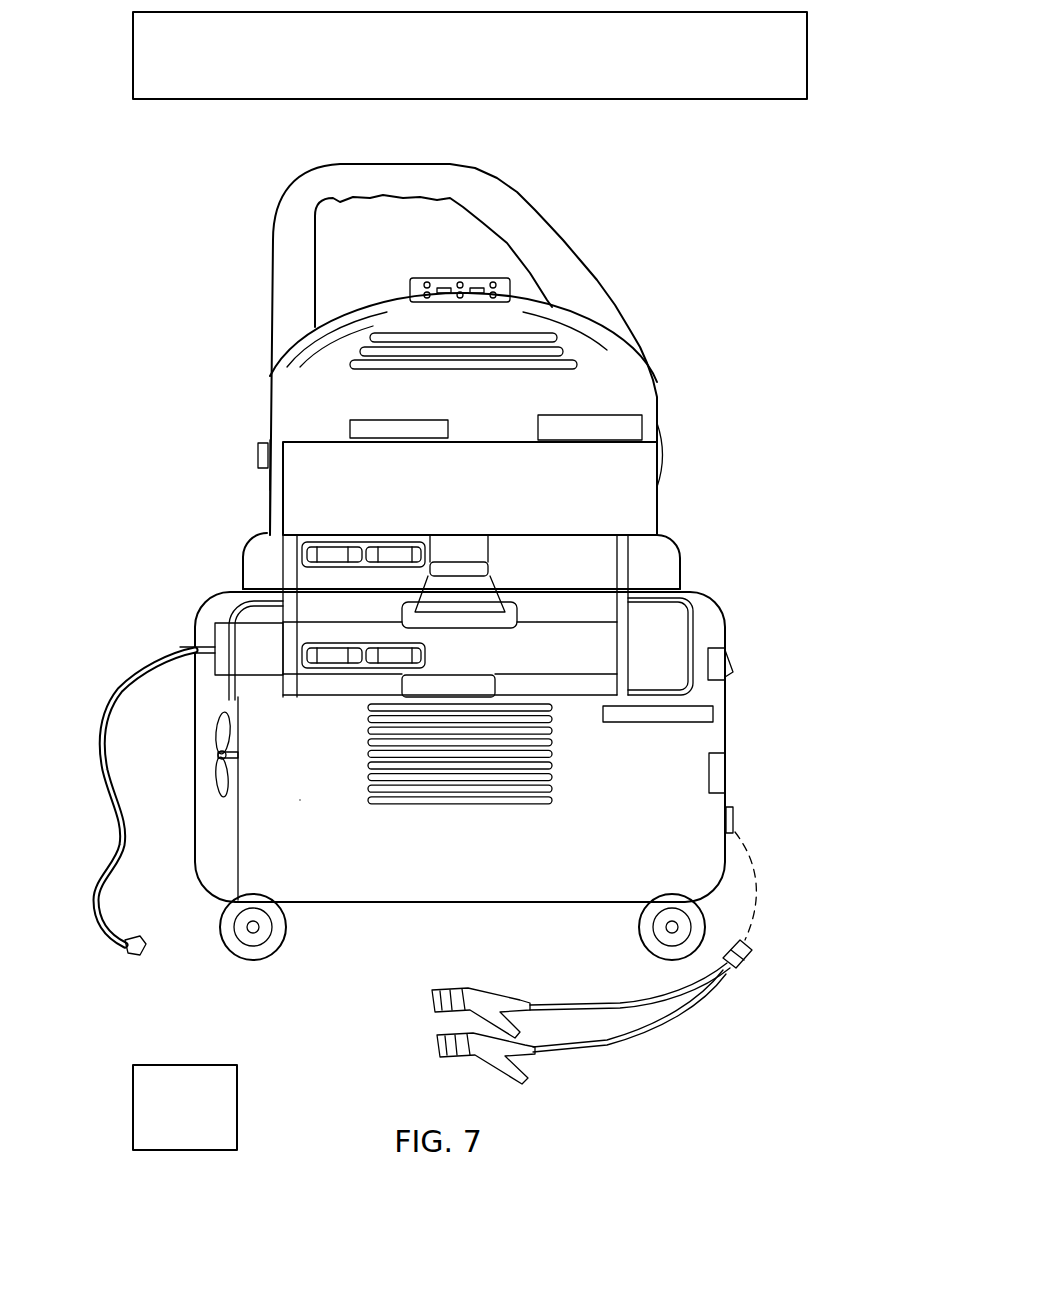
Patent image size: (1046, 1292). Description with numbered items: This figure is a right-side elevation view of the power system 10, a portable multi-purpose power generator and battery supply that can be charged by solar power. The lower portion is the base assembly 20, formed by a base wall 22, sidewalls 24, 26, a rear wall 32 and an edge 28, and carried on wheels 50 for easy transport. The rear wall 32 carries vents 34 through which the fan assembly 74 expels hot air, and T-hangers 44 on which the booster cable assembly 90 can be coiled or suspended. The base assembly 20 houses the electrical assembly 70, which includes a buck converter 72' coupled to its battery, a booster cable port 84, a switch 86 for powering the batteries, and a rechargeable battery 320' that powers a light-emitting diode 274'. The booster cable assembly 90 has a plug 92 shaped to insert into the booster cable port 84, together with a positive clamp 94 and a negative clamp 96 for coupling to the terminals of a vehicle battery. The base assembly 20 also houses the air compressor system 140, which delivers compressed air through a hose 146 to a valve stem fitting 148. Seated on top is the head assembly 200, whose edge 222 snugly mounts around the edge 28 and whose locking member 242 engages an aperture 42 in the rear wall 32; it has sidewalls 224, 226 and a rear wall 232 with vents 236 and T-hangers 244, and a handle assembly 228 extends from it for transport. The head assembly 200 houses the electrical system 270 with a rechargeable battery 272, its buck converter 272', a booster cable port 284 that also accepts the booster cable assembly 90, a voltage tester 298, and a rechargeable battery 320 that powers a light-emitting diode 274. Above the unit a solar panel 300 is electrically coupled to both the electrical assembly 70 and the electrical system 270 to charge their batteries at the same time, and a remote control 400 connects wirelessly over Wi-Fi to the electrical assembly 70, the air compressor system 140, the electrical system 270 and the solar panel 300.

The power system 10 is at (250, 172).
The base assembly 20 is at (466, 780).
The base wall 22 is at (513, 903).
The sidewall 24 is at (727, 727).
The sidewall 26 is at (196, 733).
The edge 28 is at (248, 588).
The rear wall 32 is at (597, 822).
The vents 34 is at (410, 797).
The aperture 42 is at (520, 613).
The T-hangers 44 is at (333, 643).
The wheels 50 is at (255, 950).
The electrical assembly 70 is at (240, 866).
The buck converter 72' is at (477, 667).
The fan assembly 74 is at (222, 782).
The booster cable port 84 is at (735, 808).
The switch 86 is at (731, 662).
The booster cable assembly 90 is at (629, 984).
The plug 92 is at (748, 965).
The positive clamp 94 is at (455, 995).
The negative clamp 96 is at (455, 1045).
The air compressor system 140 is at (225, 636).
The hose 146 is at (118, 840).
The valve stem fitting 148 is at (128, 952).
The head assembly 200 is at (446, 331).
The edge 222 is at (548, 626).
The side wall 224 is at (658, 505).
The side wall 226 is at (268, 492).
The handle assembly 228 is at (358, 163).
The rear wall 232 is at (468, 405).
The vents 236 is at (427, 337).
The locking member 242 is at (490, 573).
The T-hangers 244 is at (332, 542).
The electrical system 270 is at (273, 480).
The rechargeable battery 272 is at (470, 488).
The buck converter 272' is at (315, 398).
The light-emitting diode 274 is at (710, 449).
The light-emitting diode 274' is at (786, 776).
The booster cable port 284 is at (258, 448).
The voltage tester 298 is at (503, 277).
The solar panel 300 is at (470, 55).
The rechargeable battery 320 is at (643, 393).
The rechargeable battery 320' is at (731, 701).
The remote control 400 is at (185, 1107).